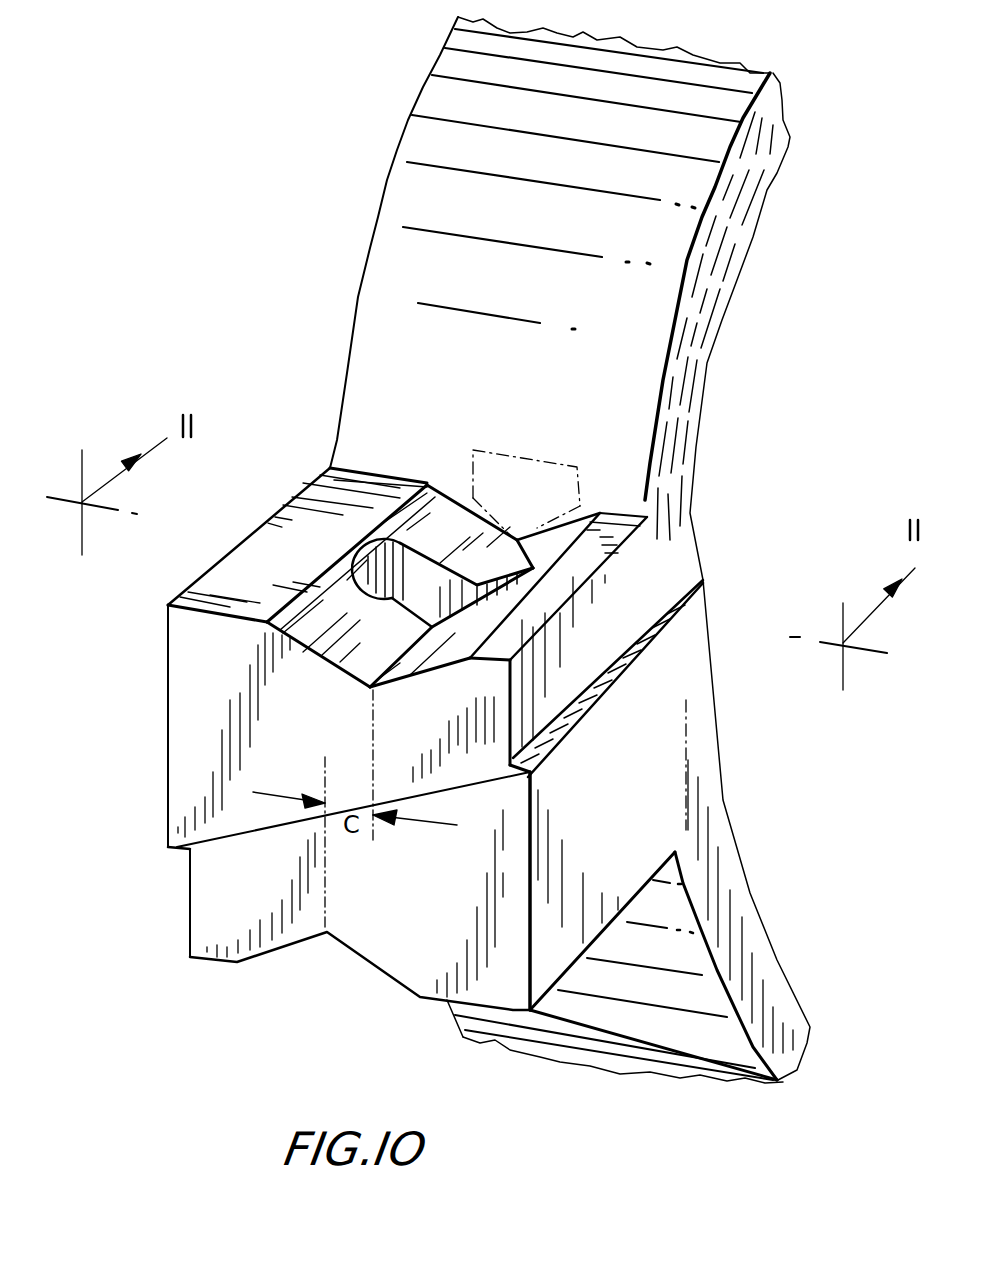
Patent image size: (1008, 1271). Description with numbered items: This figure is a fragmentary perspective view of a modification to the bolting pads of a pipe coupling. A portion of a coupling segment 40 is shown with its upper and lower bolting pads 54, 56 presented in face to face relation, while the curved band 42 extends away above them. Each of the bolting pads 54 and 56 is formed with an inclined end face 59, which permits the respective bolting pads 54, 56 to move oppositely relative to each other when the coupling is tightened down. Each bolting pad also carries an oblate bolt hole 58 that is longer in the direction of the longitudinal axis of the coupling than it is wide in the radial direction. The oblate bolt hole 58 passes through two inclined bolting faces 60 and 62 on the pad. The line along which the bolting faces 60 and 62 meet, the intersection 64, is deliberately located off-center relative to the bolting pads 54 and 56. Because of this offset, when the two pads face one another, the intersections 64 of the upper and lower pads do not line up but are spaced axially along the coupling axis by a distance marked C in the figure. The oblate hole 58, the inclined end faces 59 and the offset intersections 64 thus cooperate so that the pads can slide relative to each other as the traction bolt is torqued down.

The coupling segment 40 is at (773, 997).
The upper arm 42 is at (718, 285).
The bolting pad 54 is at (192, 732).
The bolting pad 56 is at (210, 893).
The oblate bolt hole 58 is at (393, 550).
The inclined end face 59 is at (177, 850).
The inclined bolting face 60 is at (347, 633).
The inclined bolting face 62 is at (645, 510).
The intersection of the bolting faces 64 is at (362, 697).